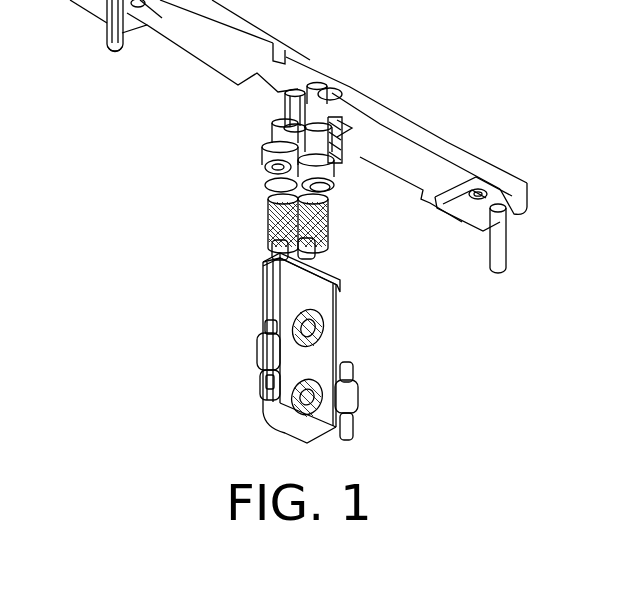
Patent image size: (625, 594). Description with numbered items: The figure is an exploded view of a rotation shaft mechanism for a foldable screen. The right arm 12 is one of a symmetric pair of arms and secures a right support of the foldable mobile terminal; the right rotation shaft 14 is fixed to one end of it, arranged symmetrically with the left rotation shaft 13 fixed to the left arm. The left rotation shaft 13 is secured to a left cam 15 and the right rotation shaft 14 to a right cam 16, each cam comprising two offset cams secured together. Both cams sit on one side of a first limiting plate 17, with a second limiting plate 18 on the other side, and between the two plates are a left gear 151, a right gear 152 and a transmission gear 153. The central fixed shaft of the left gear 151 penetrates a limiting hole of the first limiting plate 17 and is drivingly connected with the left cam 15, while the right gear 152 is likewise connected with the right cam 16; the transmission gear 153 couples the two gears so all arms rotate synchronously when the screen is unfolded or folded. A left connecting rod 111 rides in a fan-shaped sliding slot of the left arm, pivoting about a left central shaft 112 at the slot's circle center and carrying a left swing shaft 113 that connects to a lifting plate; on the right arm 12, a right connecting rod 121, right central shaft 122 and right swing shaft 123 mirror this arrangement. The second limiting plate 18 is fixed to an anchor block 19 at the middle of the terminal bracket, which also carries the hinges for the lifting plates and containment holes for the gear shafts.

The right arm 12 is at (447, 140).
The right connecting rod 121 is at (472, 208).
The right central shaft 122 is at (482, 189).
The right swing shaft 123 is at (490, 245).
The left connecting rod 111 is at (107, 28).
The left central shaft 112 is at (159, 20).
The left swing shaft 113 is at (116, 46).
The left rotation shaft 13 is at (318, 85).
The right rotation shaft 14 is at (340, 97).
The left cam 15 is at (262, 153).
The left gear 151 is at (268, 226).
The right gear 152 is at (335, 243).
The transmission gear 153 is at (338, 193).
The right cam 16 is at (322, 155).
The first limiting plate 17 is at (333, 217).
The second limiting plate 18 is at (339, 288).
The anchor block 19 is at (282, 416).